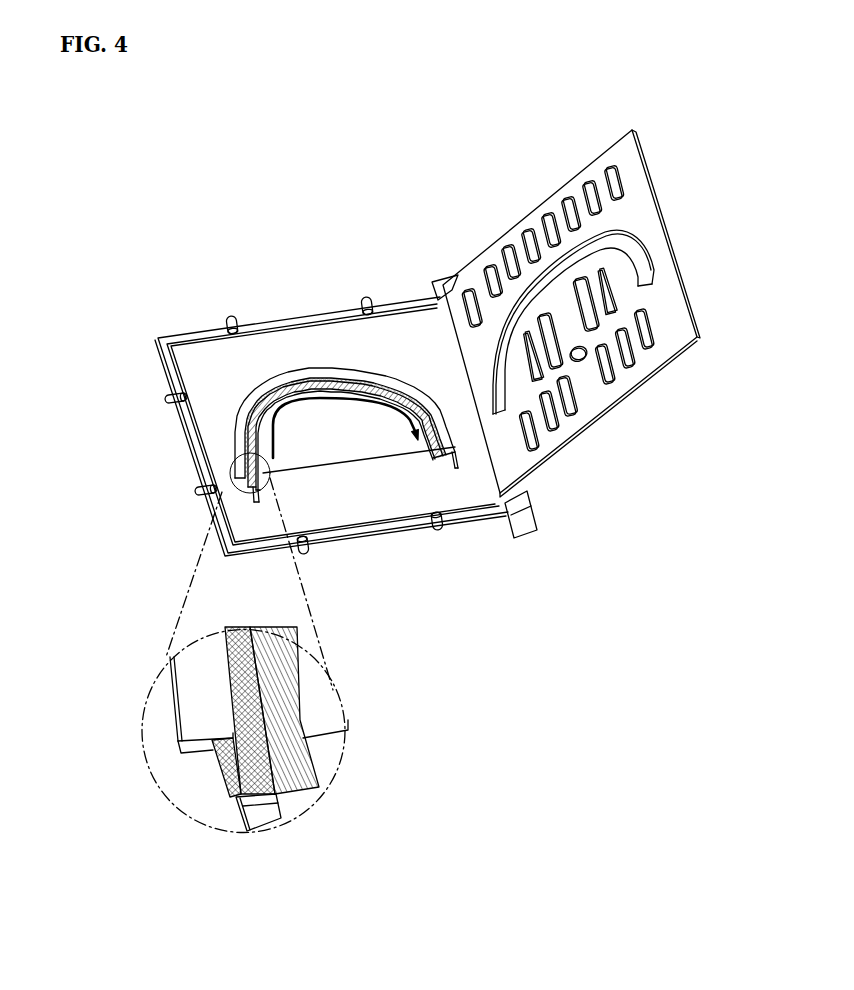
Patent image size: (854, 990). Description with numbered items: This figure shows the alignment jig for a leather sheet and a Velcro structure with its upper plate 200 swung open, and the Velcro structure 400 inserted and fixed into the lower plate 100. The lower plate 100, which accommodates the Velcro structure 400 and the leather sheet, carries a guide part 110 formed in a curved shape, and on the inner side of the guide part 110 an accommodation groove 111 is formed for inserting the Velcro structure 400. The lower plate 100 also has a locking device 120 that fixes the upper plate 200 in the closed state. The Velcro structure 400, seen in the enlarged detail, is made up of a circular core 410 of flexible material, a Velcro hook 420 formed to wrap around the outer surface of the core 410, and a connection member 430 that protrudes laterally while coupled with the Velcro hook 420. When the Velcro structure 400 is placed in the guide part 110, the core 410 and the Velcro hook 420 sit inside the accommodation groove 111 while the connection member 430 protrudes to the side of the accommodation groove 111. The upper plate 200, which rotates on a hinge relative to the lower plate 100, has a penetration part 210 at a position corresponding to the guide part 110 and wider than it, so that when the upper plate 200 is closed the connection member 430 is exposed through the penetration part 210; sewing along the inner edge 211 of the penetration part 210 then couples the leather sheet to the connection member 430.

The lower plate 100 is at (184, 322).
The guide part 110 is at (248, 407).
The accommodation groove 111 is at (220, 745).
The locking device 120 is at (306, 549).
The upper plate 200 is at (580, 161).
The penetration part 210 is at (628, 238).
The inner edge 211 is at (553, 266).
The Velcro structure 400 is at (350, 797).
The core 410 is at (246, 813).
The Velcro hook 420 is at (265, 762).
The connection member 430 is at (287, 710).